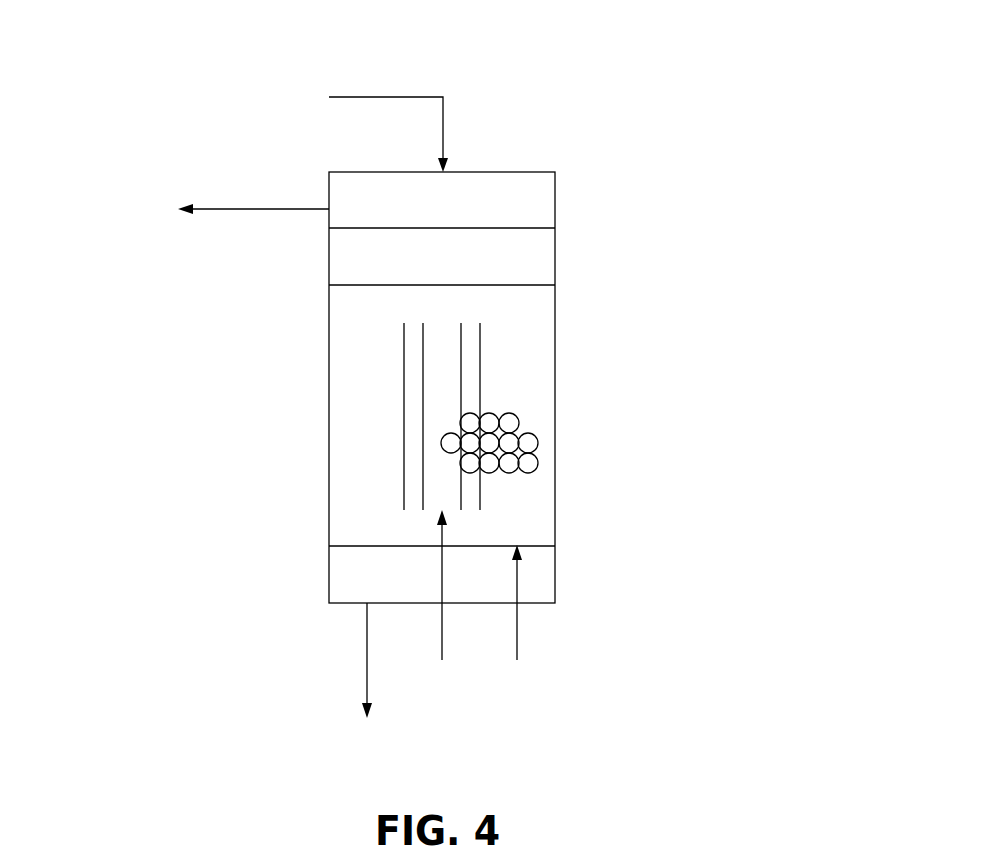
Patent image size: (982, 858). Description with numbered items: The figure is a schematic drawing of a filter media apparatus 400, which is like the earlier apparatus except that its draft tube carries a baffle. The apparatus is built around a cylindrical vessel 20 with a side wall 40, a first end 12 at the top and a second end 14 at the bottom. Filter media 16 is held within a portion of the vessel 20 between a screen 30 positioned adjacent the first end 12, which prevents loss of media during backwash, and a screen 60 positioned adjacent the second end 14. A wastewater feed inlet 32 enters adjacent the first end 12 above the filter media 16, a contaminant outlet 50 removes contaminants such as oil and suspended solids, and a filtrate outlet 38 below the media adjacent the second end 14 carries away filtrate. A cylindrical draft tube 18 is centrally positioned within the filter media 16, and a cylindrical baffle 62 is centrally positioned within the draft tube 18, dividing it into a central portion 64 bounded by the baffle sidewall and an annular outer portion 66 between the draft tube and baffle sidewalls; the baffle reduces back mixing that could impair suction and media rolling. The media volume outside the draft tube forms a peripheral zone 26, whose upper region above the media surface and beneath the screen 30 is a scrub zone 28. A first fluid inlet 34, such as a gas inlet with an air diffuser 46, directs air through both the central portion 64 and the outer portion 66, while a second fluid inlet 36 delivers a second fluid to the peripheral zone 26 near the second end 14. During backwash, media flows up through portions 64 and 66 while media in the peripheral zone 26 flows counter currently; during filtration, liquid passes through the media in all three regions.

The filter media apparatus 400 is at (600, 171).
The first end 12 is at (329, 190).
The second end 14 is at (329, 583).
The filter media 16 is at (538, 445).
The draft tube 18 is at (404, 492).
The vessel 20 is at (536, 603).
The peripheral zone 26 is at (367, 453).
The scrub zone 28 is at (555, 257).
The screen 30 is at (329, 228).
The wastewater feed inlet 32 is at (386, 97).
The first fluid inlet 34 is at (442, 638).
The second fluid inlet 36 is at (517, 575).
The filtrate outlet 38 is at (367, 680).
The side wall 40 is at (555, 332).
The air diffuser 46 is at (482, 492).
The contaminant outlet 50 is at (217, 209).
The screen 60 is at (329, 547).
The baffle 62 is at (422, 342).
The central portion 64 is at (442, 398).
The outer portion 66 is at (404, 378).